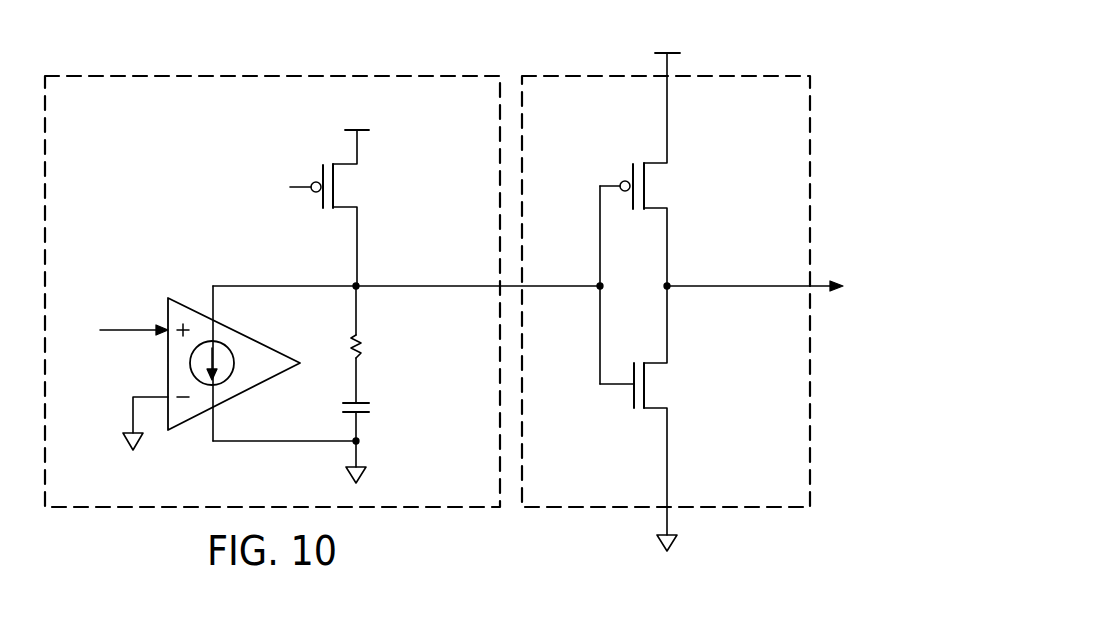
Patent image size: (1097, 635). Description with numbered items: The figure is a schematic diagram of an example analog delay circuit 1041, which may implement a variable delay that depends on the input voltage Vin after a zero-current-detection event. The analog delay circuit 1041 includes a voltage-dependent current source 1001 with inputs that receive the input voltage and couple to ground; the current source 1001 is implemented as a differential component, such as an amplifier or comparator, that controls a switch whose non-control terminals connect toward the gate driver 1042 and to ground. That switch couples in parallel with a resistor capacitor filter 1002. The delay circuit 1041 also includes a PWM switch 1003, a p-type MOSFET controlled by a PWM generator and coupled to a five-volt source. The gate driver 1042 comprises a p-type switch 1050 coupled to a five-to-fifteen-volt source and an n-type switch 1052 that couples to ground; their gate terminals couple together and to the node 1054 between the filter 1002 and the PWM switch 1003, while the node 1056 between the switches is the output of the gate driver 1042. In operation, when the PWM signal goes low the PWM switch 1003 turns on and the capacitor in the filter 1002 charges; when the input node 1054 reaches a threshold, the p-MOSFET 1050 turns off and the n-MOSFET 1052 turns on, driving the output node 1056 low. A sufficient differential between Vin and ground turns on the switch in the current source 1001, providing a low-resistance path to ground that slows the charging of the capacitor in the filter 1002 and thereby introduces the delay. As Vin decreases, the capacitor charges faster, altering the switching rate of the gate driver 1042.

The analog delay circuit 1041 is at (180, 75).
The gate driver 1042 is at (745, 75).
The PWM switch 1003 is at (321, 170).
The voltage-dependent current source 1001 is at (275, 325).
The resistor capacitor (RC) filter 1002 is at (388, 412).
The node 1054 is at (350, 281).
The switch (p-MOSFET) 1050 is at (632, 176).
The switch (n-MOSFET) 1052 is at (631, 396).
The output node 1056 is at (707, 260).